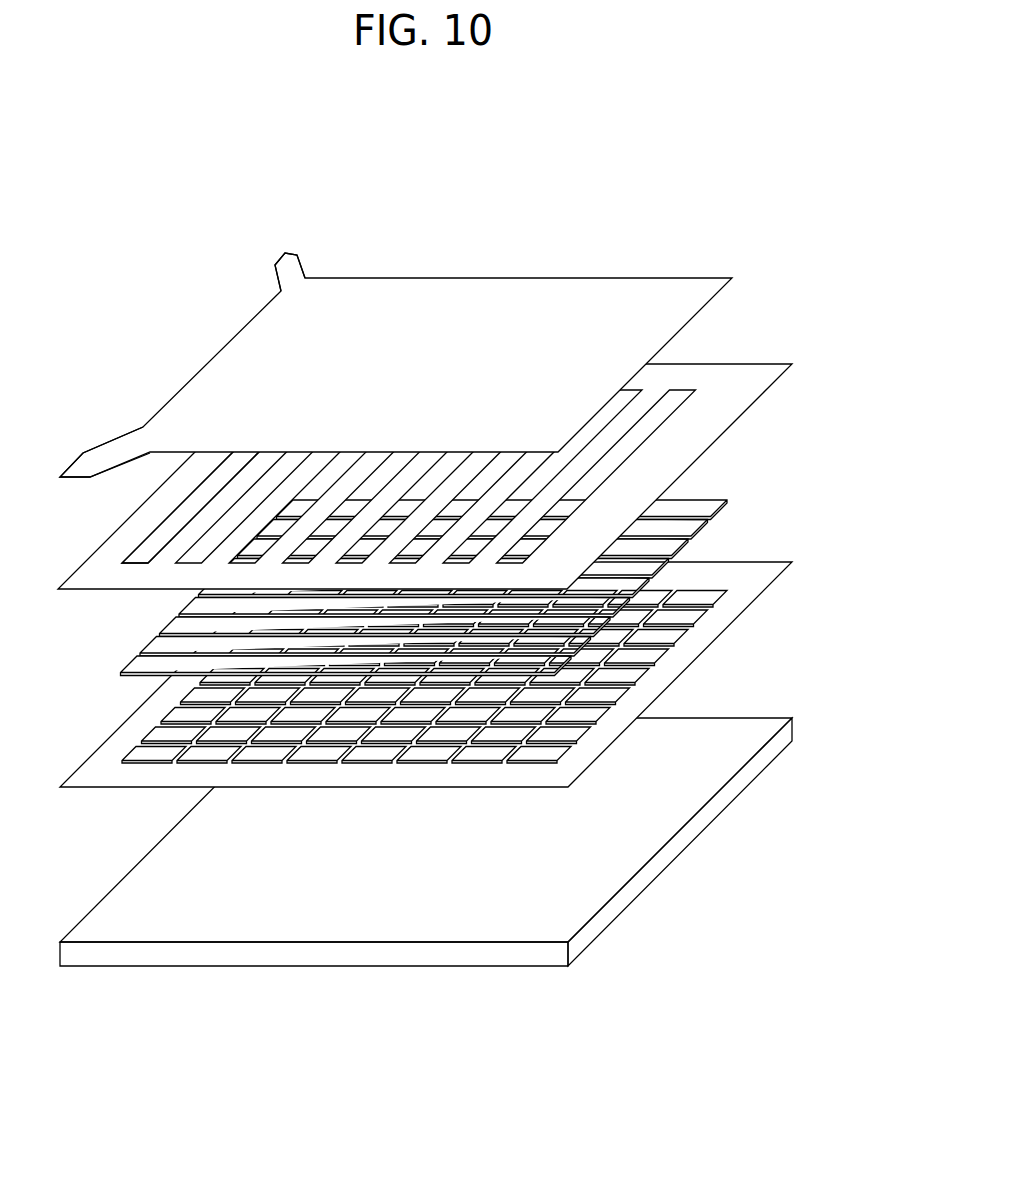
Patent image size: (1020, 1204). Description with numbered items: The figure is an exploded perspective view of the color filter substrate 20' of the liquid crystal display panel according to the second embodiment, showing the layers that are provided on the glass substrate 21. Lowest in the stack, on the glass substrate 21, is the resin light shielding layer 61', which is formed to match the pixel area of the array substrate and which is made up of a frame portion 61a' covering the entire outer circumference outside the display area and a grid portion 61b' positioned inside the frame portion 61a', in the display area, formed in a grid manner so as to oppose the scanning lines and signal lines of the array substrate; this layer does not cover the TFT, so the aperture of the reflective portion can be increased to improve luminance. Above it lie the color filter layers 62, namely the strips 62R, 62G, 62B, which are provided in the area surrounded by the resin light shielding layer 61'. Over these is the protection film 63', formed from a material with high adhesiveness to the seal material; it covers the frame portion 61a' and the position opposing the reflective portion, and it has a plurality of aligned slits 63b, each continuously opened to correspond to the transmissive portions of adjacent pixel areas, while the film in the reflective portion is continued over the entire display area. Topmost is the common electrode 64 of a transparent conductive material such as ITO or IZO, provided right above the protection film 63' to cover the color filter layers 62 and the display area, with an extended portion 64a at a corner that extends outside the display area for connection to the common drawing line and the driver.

The color filter substrate 20' is at (437, 593).
The glass substrate 21 is at (481, 956).
The resin light shielding layer 61' is at (419, 674).
The frame portion 61a' is at (403, 674).
The grid portion 61b' is at (397, 677).
The color filter layers 62 is at (491, 564).
The red color filter layer 62R is at (714, 500).
The green color filter layer 62G is at (708, 521).
The blue color filter layer 62B is at (693, 541).
The protection film 63' is at (421, 451).
The aligned slits 63b is at (152, 532).
The common electrode 64 is at (397, 347).
The extended portion 64a is at (288, 262).